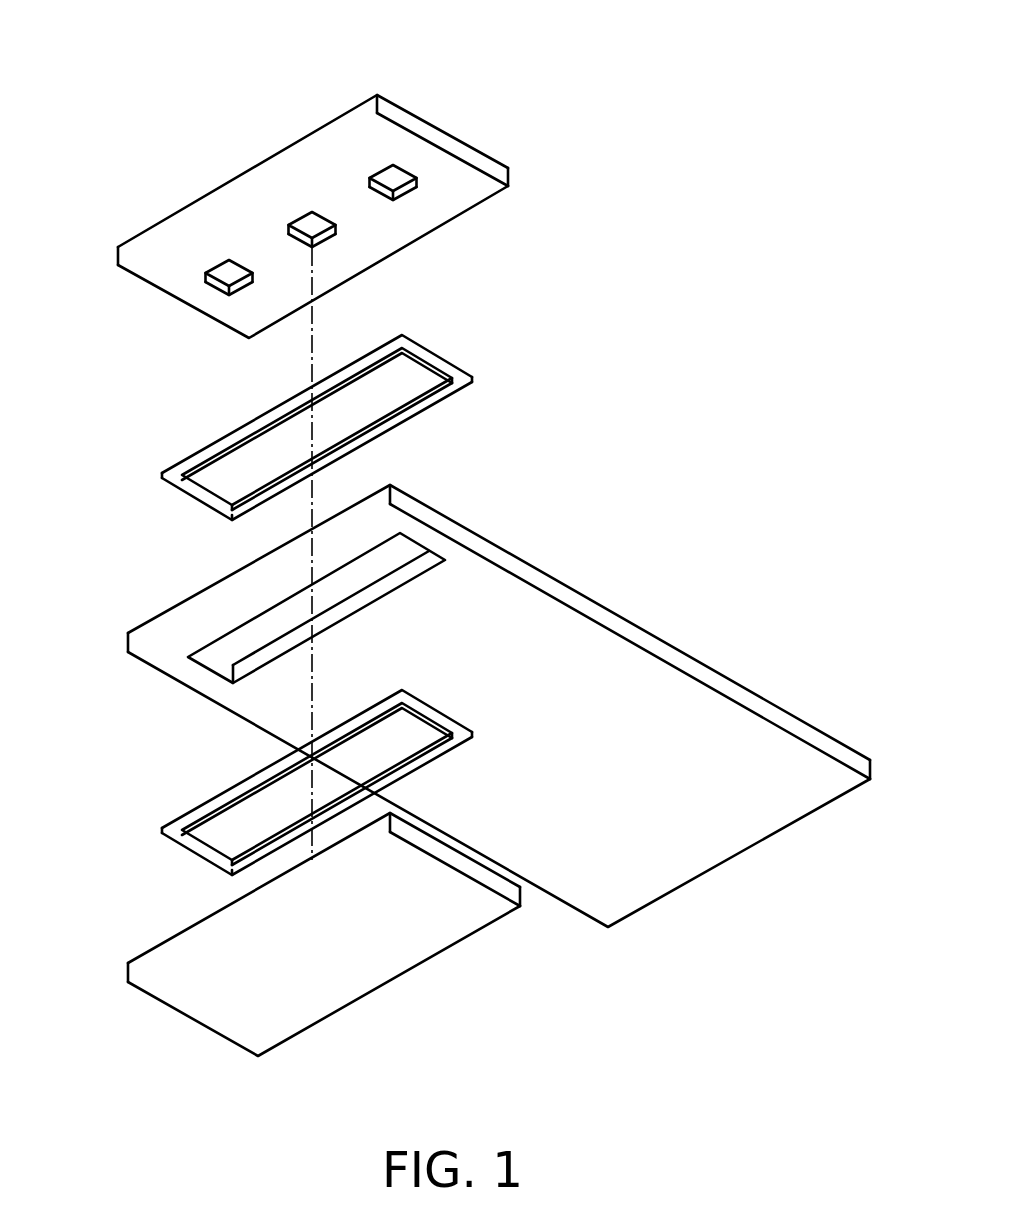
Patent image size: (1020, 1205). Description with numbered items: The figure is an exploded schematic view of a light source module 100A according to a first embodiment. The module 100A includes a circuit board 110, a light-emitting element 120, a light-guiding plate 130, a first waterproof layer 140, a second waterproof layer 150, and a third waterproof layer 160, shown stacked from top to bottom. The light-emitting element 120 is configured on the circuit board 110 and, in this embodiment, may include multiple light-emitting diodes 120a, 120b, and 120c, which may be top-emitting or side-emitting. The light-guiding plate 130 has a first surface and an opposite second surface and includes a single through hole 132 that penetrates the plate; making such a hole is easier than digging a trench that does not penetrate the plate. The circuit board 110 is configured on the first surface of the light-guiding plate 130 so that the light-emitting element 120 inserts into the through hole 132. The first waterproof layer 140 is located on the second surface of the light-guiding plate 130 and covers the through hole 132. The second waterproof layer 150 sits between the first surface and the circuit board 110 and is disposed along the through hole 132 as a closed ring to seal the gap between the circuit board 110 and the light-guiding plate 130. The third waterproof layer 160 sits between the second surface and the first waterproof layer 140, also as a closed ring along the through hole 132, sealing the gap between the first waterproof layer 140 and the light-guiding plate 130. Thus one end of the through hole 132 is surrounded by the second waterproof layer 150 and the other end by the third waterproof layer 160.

The light source module 100A is at (918, 1092).
The circuit board 110 is at (148, 235).
The light-emitting element 120 is at (788, 132).
The light-emitting diode 120a is at (227, 278).
The light-emitting diode 120b is at (302, 232).
The light-emitting diode 120c is at (390, 185).
The light-guiding plate 130 is at (463, 704).
The through hole 132 is at (328, 598).
The first waterproof layer 140 is at (140, 955).
The second waterproof layer 150 is at (203, 448).
The third waterproof layer 160 is at (203, 802).